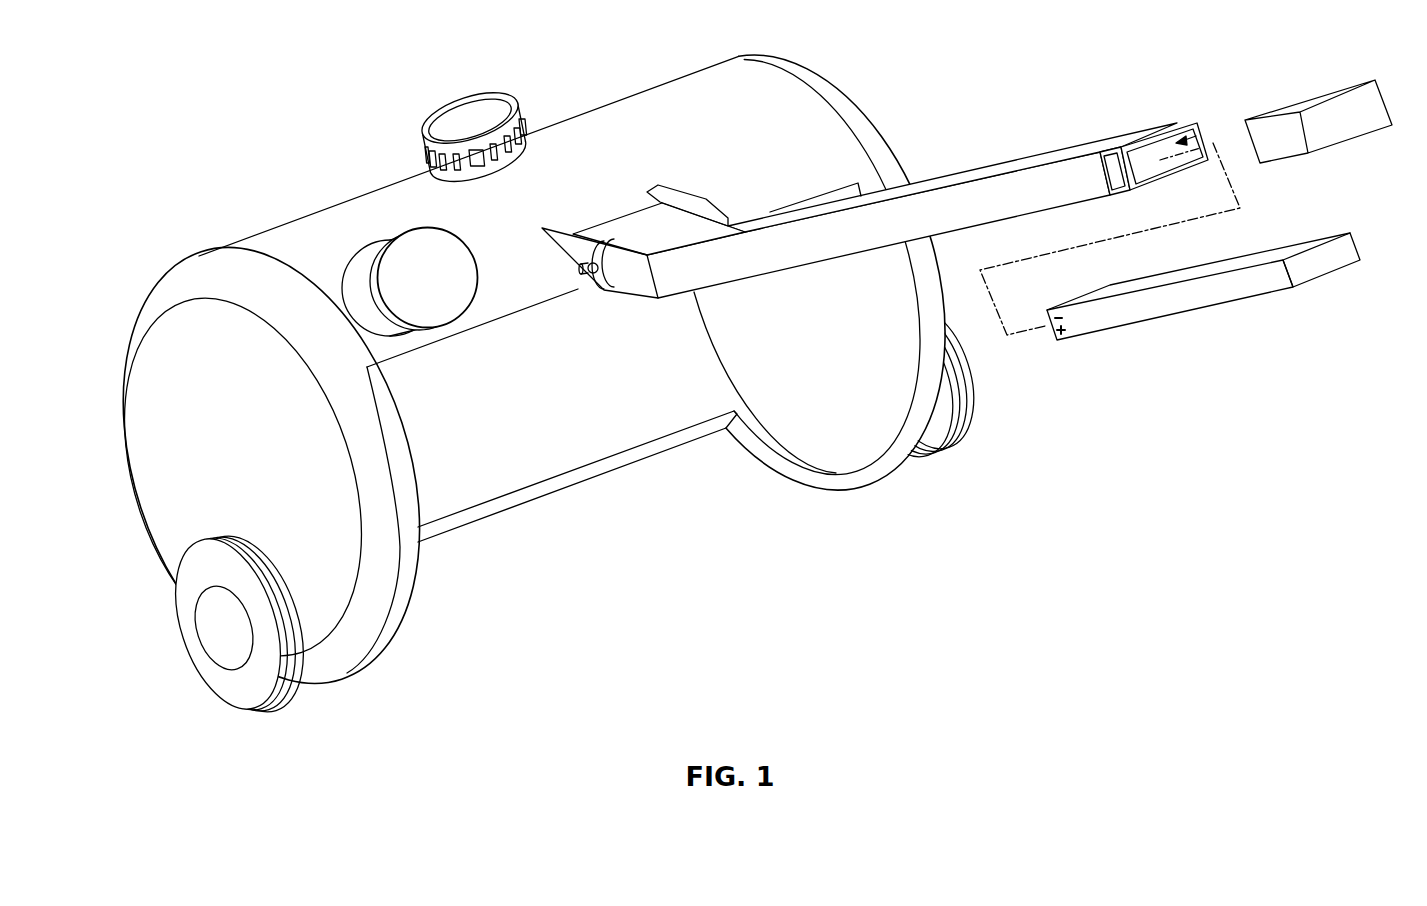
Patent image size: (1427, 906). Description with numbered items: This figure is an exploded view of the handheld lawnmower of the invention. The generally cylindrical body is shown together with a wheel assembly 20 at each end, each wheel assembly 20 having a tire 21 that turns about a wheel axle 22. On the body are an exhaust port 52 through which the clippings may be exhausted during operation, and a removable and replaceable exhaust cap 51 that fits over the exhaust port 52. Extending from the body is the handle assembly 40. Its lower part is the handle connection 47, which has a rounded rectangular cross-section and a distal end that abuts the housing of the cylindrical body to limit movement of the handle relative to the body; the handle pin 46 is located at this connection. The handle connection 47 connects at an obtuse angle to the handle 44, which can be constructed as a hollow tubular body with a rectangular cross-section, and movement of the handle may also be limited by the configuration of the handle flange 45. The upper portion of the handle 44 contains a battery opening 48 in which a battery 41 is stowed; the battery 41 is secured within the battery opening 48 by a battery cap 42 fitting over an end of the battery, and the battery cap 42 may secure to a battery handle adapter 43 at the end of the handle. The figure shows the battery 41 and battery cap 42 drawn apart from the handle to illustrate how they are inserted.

The wheel assembly 20 is at (183, 697).
The tire 21 is at (556, 531).
The wheel axle 22 is at (215, 636).
The handle assembly 40 is at (1340, 176).
The battery 41 is at (1163, 318).
The battery cap 42 is at (1262, 106).
The battery handle adapter 43 is at (1112, 173).
The handle 44 is at (1008, 190).
The handle flange 45 is at (690, 195).
The handle pin 46 is at (590, 270).
The handle connection 47 is at (625, 225).
The battery opening 48 is at (1204, 134).
The exhaust cap 51 is at (450, 250).
The exhaust port 52 is at (353, 280).